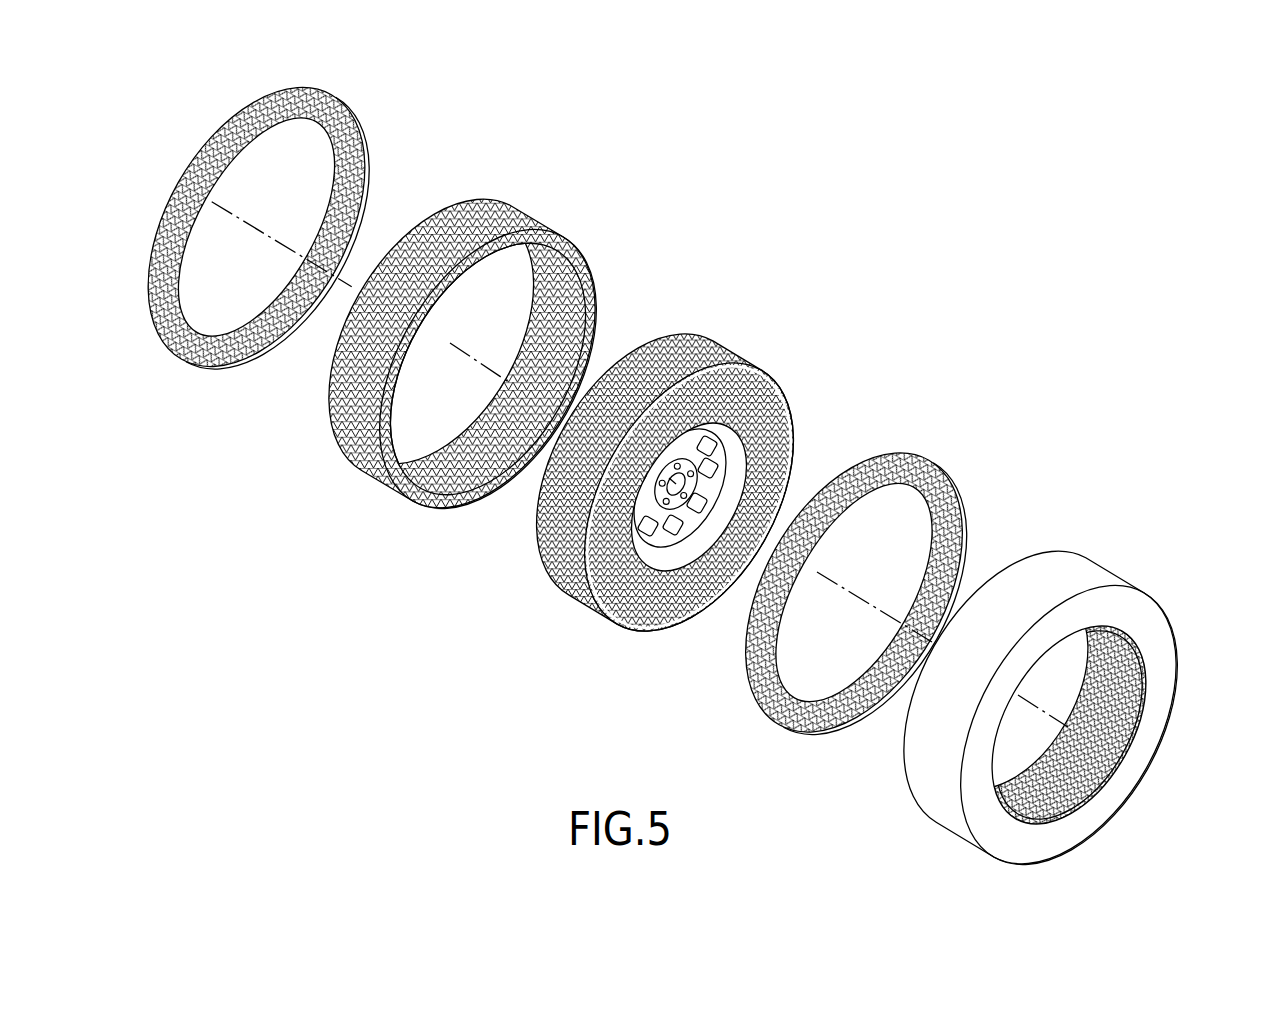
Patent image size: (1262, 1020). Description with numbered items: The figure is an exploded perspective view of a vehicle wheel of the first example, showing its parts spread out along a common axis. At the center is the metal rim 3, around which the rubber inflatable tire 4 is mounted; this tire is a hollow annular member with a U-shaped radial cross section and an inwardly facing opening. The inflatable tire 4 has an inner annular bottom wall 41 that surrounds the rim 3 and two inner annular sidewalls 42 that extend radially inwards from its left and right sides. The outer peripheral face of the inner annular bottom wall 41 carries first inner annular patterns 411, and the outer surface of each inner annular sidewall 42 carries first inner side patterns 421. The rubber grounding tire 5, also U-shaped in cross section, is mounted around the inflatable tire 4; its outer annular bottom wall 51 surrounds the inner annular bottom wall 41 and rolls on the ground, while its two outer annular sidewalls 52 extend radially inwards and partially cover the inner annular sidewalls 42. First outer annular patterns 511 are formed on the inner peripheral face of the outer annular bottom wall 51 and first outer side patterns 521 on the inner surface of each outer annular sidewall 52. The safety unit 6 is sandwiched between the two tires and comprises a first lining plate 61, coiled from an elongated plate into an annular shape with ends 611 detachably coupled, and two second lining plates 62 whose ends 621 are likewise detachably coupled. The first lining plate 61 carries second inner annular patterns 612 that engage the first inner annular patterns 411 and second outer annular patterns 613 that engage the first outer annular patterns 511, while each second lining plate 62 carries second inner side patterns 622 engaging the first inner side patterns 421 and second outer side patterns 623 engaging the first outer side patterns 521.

The rim 3 is at (732, 427).
The inflatable tire 4 is at (574, 612).
The inner annular bottom wall 41 is at (551, 577).
The first inner annular patterns 411 is at (540, 525).
The inner annular sidewalls 42 is at (640, 633).
The first inner side patterns 421 is at (672, 609).
The grounding tire 5 is at (905, 840).
The outer annular bottom wall 51 is at (925, 777).
The first outer annular patterns 511 is at (1143, 708).
The outer annular sidewalls 52 is at (1057, 815).
The first outer side patterns 521 is at (1075, 735).
The safety unit 6 is at (364, 506).
The first lining plate 61 is at (341, 462).
The ends of first lining plate 611 is at (525, 247).
The second inner annular patterns 612 is at (593, 288).
The second outer annular patterns 613 is at (339, 417).
The second lining plates 62 is at (178, 364).
The ends of second lining plate 621 is at (270, 90).
The second inner side patterns 622 is at (352, 143).
The second outer side patterns 623 is at (950, 503).